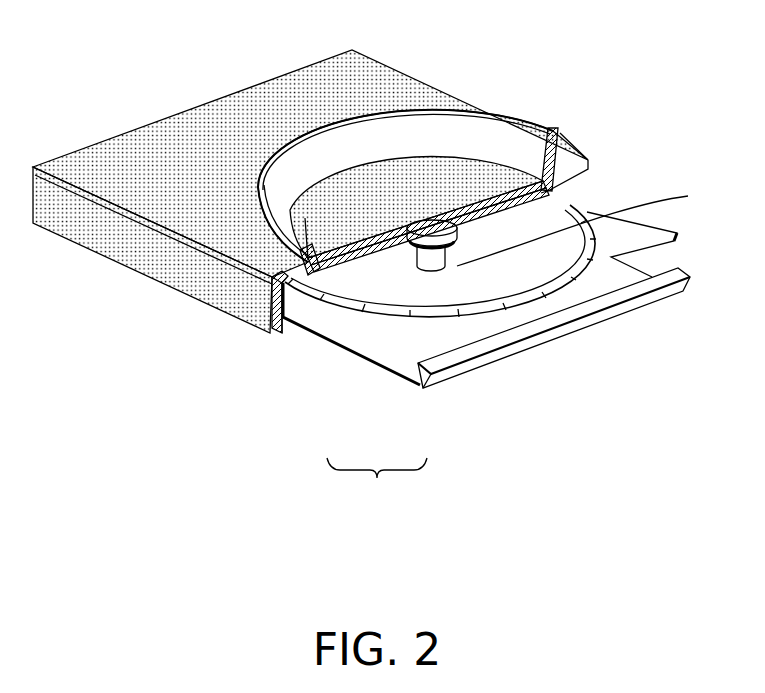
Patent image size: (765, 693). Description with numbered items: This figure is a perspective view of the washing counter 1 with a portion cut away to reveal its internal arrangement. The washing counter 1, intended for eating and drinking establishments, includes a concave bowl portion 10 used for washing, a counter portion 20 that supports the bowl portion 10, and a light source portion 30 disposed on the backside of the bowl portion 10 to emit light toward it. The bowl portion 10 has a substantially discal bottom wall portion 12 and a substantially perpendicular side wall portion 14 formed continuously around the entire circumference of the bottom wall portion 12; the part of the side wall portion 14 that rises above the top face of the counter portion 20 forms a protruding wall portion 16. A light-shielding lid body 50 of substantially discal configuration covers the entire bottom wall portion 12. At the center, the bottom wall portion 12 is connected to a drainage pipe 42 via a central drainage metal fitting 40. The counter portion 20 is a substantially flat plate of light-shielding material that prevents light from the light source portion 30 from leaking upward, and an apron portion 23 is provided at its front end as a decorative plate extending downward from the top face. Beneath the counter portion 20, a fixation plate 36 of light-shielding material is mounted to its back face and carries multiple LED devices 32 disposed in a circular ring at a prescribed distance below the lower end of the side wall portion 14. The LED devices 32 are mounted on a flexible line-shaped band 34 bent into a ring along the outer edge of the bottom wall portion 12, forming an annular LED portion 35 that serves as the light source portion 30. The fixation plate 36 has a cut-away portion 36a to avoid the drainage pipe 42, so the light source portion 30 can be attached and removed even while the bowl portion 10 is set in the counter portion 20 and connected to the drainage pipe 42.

The washing counter 1 is at (308, 221).
The bowl portion 10 is at (569, 108).
The bottom wall portion 12 is at (307, 318).
The side wall portion 14 is at (305, 167).
The protruding wall portion 16 is at (277, 222).
The counter portion 20 is at (135, 167).
The apron portion 23 is at (73, 240).
The light source portion 30 is at (445, 346).
The LED devices 32 is at (377, 327).
The line-shaped band 34 is at (412, 327).
The annular LED portion 35 is at (377, 485).
The fixation plate 36 is at (280, 320).
The cut-away portion 36a is at (588, 210).
The central drainage metal fitting 40 is at (432, 228).
The drainage pipe 42 is at (590, 222).
The light-shielding lid body 50 is at (378, 195).